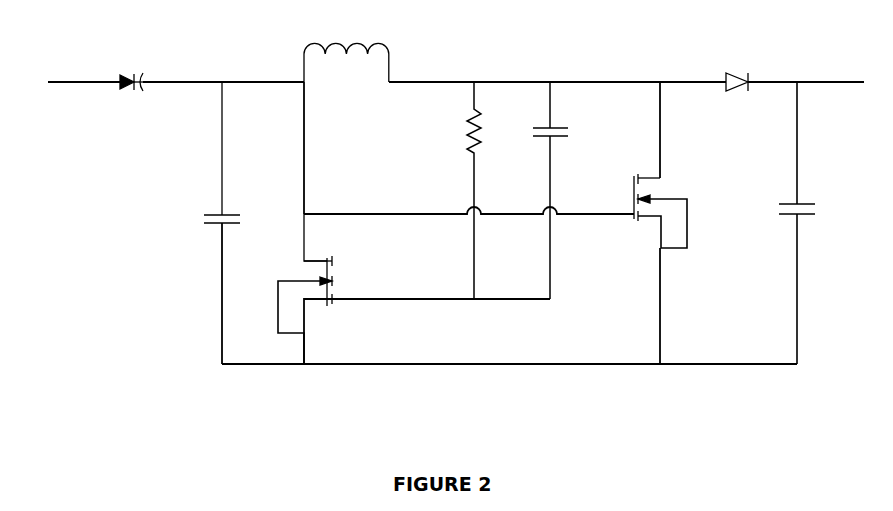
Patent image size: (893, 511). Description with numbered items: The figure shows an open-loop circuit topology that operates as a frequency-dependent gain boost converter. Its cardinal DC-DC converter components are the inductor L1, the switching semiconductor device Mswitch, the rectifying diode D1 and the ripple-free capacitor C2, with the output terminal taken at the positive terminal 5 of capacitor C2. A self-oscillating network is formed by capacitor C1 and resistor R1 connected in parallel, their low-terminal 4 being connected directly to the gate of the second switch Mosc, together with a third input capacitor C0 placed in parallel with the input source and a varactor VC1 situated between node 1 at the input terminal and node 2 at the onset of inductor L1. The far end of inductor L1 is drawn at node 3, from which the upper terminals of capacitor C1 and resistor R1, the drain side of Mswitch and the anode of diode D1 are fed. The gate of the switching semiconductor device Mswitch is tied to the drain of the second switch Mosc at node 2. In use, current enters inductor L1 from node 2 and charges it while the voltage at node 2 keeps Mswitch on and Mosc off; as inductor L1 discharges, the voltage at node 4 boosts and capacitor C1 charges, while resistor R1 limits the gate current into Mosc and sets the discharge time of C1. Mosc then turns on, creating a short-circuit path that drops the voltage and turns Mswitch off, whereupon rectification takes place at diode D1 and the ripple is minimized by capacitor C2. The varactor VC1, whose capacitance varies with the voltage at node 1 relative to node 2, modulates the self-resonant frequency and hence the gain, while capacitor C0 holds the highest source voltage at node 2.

The node 1 is at (77, 69).
The node 2 is at (388, 213).
The node 3 is at (557, 120).
The low-terminal (node) 4 is at (441, 291).
The positive terminal 5 is at (806, 210).
The varactor VC1 is at (146, 93).
The third input capacitor C0 is at (232, 219).
The inductor L1 is at (346, 54).
The resistor R1 is at (461, 190).
The capacitor C1 is at (561, 190).
The ripple-free capacitor C2 is at (808, 212).
The rectifying diode D1 is at (737, 69).
The second switch Mosc is at (311, 310).
The switching semiconductor device Mswitch is at (645, 269).